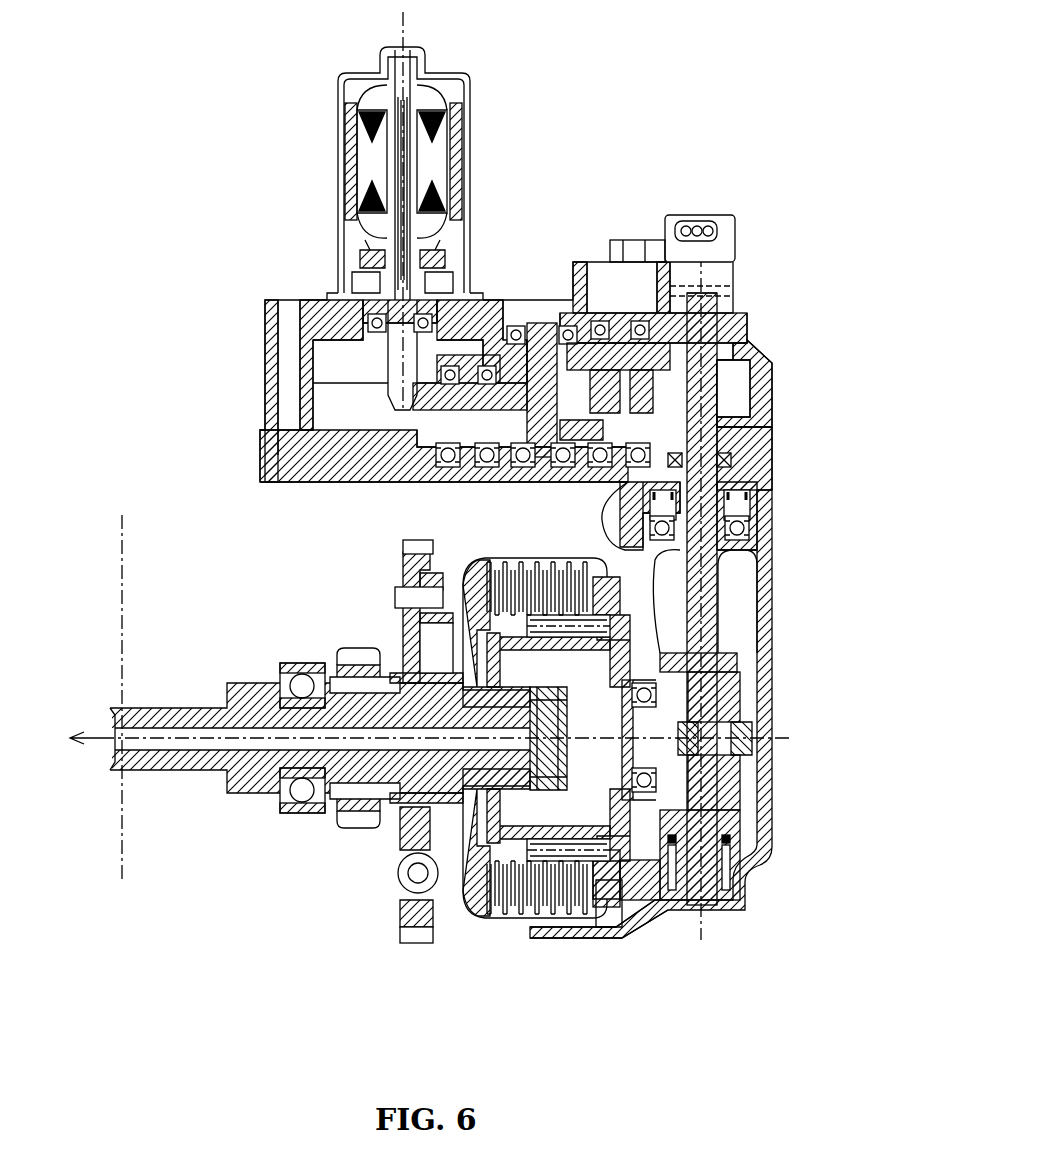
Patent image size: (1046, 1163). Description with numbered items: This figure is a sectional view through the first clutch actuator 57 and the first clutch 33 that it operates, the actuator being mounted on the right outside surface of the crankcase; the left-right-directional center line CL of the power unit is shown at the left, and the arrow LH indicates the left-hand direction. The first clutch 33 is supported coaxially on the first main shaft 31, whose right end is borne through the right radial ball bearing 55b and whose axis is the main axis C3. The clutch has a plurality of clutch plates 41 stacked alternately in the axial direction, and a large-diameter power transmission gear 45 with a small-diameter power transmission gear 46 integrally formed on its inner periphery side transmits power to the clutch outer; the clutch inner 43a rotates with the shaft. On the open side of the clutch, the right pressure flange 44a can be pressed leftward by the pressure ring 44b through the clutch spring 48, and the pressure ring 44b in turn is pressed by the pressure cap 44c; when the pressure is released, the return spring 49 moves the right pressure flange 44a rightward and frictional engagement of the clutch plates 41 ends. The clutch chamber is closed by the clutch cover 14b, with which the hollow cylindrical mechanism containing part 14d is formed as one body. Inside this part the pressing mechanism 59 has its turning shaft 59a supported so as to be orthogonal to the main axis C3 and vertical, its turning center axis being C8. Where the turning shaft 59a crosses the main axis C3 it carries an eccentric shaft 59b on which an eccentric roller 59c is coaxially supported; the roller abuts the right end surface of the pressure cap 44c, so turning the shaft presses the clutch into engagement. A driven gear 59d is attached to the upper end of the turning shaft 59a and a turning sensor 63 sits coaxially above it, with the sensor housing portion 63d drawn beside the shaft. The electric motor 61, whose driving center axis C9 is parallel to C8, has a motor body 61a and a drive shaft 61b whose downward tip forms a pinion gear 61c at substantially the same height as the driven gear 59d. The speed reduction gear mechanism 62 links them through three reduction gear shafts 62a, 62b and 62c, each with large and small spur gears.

The driving center axis C9 is at (409, 30).
The turning center axis C8 is at (706, 270).
The left-right-directional center line CL is at (124, 572).
The main axis C3 is at (148, 735).
The left-hand direction LH is at (81, 726).
The electric motor 61 is at (442, 173).
The motor body 61a is at (467, 97).
The drive shaft 61b is at (411, 245).
The pinion gear 61c is at (388, 400).
The first clutch actuator 57 is at (660, 165).
The turning sensor 63 is at (737, 225).
The sensor housing portion 63d is at (762, 462).
The speed reduction gear mechanism 62 is at (608, 424).
The reduction gear shaft 62a is at (452, 468).
The reduction gear shaft 62b is at (530, 468).
The reduction gear shaft 62c is at (612, 468).
The pressing mechanism 59 is at (739, 599).
The turning shaft 59a is at (722, 595).
The eccentric shaft 59b is at (742, 700).
The eccentric roller 59c is at (752, 738).
The driven gear 59d is at (750, 405).
The mechanism containing part 14d is at (762, 660).
The clutch cover 14b is at (570, 940).
The right pressure flange 44a is at (640, 920).
The pressure ring 44b is at (740, 870).
The pressure cap 44c is at (676, 768).
The first clutch 33 is at (620, 905).
The first main shaft 31 is at (180, 705).
The clutch spring 48 is at (560, 790).
The right radial ball bearing 55b is at (292, 663).
The small-diameter power transmission gear 46 is at (360, 648).
The clutch housing 43a is at (470, 915).
The clutch plates 41 is at (490, 918).
The return spring 49 is at (575, 650).
The large-diameter power transmission gear 45 is at (410, 943).